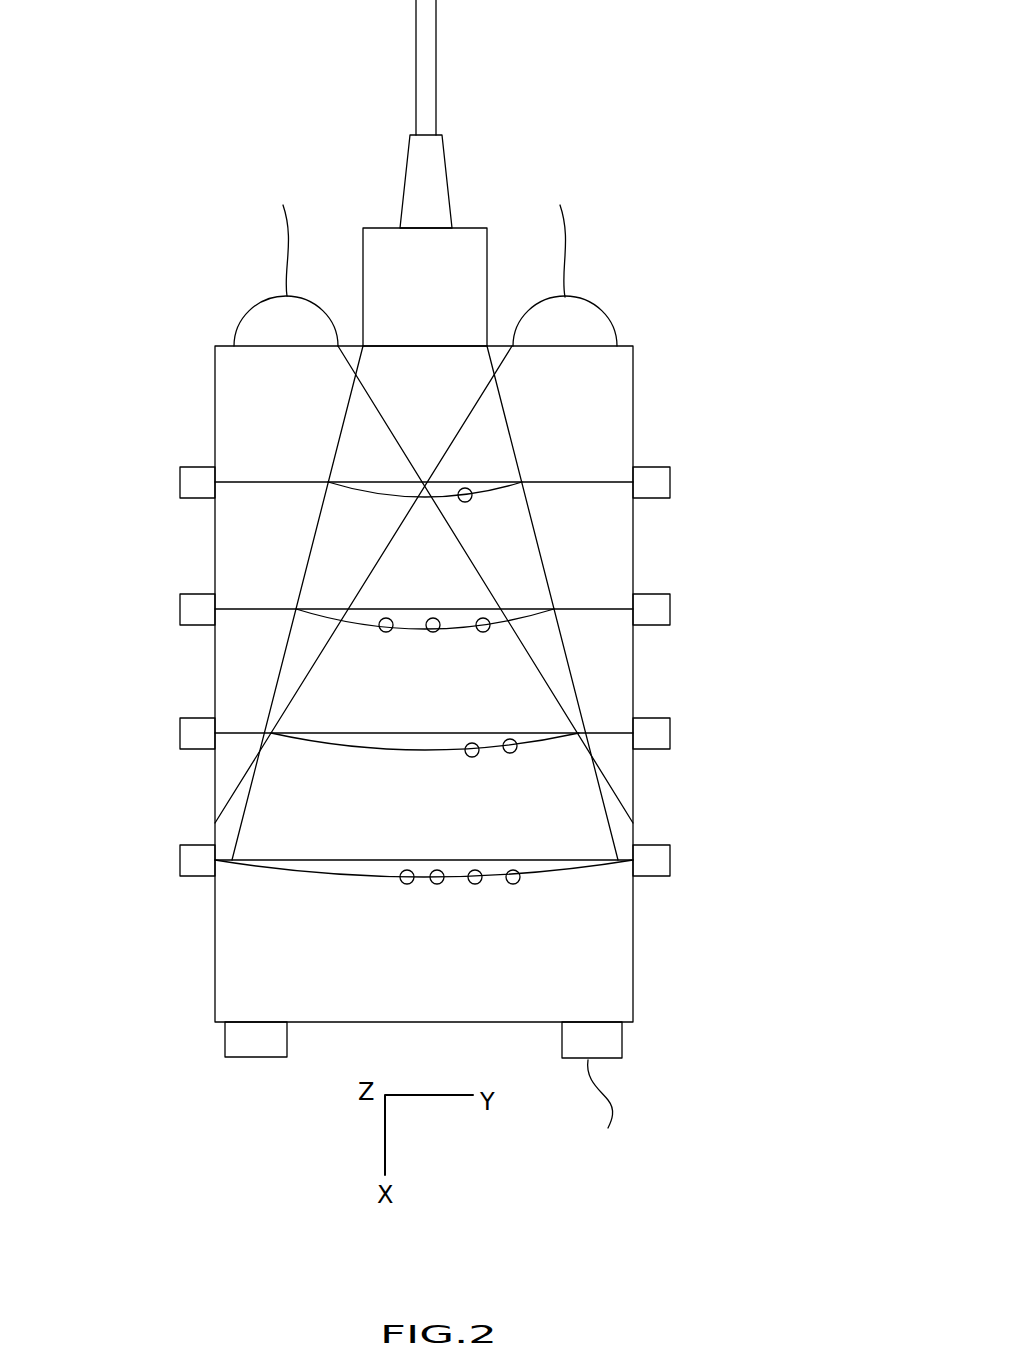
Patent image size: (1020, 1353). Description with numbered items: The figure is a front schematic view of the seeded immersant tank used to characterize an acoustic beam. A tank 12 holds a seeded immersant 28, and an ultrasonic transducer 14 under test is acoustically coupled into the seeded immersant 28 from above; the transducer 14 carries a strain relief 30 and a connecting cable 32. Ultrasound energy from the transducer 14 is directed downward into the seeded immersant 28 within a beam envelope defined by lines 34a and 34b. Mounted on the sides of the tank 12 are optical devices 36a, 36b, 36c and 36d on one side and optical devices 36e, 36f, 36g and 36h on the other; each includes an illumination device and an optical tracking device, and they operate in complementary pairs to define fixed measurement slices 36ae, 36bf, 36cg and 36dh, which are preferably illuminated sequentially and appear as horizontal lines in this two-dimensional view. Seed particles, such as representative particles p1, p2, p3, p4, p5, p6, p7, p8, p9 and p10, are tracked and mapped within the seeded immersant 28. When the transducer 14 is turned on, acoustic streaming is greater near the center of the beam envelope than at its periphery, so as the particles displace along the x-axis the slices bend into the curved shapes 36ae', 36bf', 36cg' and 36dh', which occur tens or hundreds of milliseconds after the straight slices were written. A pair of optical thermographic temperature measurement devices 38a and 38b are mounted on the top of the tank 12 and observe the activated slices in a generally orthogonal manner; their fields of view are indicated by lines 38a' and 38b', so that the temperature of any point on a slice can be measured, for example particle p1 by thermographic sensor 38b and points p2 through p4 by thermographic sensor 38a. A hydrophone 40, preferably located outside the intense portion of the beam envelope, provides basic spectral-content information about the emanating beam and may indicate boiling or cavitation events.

The tank 12 is at (296, 1042).
The ultrasonic transducer 14 is at (472, 228).
The seeded immersant 28 is at (623, 368).
The strain relief 30 is at (407, 160).
The connecting cable 32 is at (416, 52).
The beam envelope line 34a is at (343, 428).
The beam envelope line 34b is at (512, 433).
The optical device 36a is at (180, 482).
The optical device 36b is at (180, 609).
The optical device 36c is at (180, 733).
The optical device 36d is at (180, 860).
The optical device 36e is at (670, 482).
The optical device 36f is at (670, 609).
The optical device 36g is at (670, 733).
The optical device 36h is at (670, 860).
The measurement slice 36ae is at (424, 519).
The curved slice shape 36ae' is at (384, 521).
The measurement slice 36bf is at (424, 640).
The curved slice shape 36bf' is at (425, 665).
The measurement slice 36cg is at (470, 770).
The curved slice shape 36cg' is at (425, 787).
The measurement slice 36dh is at (463, 910).
The curved slice shape 36dh' is at (424, 910).
The optical thermographic temperature measurement device 38a is at (273, 275).
The optical thermographic temperature measurement device 38b is at (616, 275).
The field of view line 38a' is at (485, 584).
The field of view line 38b' is at (363, 584).
The hydrophone 40 is at (622, 1045).
The seed particle p1 is at (468, 503).
The seed particle p2 is at (485, 633).
The seed particle p3 is at (435, 633).
The seed particle p4 is at (388, 633).
The seed particle p5 is at (512, 755).
The seed particle p6 is at (473, 758).
The seed particle p7 is at (514, 885).
The seed particle p8 is at (475, 885).
The seed particle p9 is at (437, 885).
The seed particle p10 is at (406, 885).